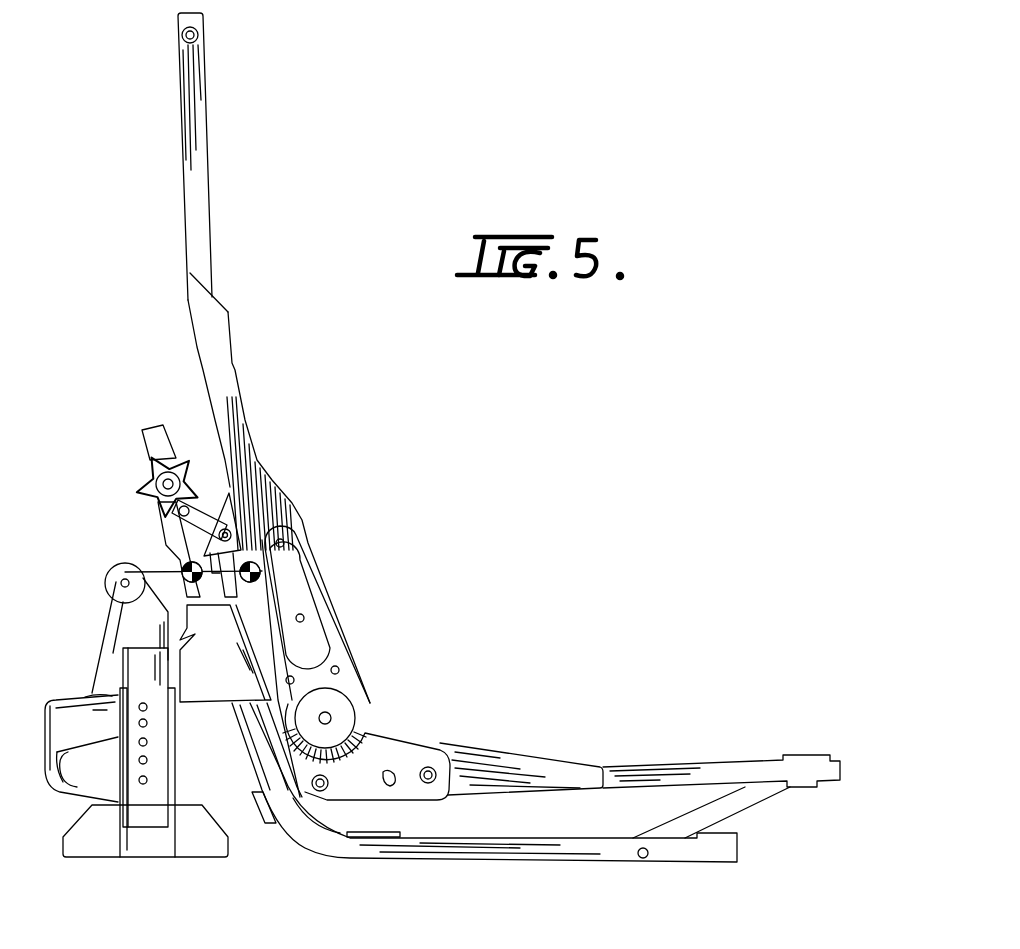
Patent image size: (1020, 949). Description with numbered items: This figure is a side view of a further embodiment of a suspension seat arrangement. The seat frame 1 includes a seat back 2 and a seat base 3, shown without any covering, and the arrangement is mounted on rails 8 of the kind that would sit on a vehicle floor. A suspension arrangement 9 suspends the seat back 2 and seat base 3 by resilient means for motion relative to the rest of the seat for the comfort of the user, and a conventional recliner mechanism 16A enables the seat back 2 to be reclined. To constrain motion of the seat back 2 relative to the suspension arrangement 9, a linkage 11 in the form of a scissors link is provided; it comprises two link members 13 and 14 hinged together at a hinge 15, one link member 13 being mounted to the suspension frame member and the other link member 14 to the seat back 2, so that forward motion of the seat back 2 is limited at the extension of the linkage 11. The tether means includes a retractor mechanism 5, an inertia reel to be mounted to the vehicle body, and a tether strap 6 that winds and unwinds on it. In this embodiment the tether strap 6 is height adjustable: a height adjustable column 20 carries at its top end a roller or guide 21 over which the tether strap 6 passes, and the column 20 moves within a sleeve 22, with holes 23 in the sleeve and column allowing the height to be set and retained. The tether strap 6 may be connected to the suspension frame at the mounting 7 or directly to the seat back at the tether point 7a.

The seat frame 1 is at (247, 350).
The seat back 2 is at (195, 172).
The seat base 3 is at (658, 768).
The retractor mechanism 5 is at (58, 782).
The tether strap 6 is at (100, 635).
The mounting 7 is at (178, 556).
The tether point 7a is at (262, 571).
The rails 8 is at (510, 850).
The suspension arrangement 9 is at (151, 425).
The linkage 11 is at (218, 488).
The link member 13 is at (160, 480).
The link member 14 is at (230, 513).
The hinge 15 is at (240, 531).
The recliner mechanism 16A is at (340, 716).
The height adjustable column 20 is at (145, 667).
The roller or guide 21 is at (118, 572).
The sleeve 22 is at (175, 731).
The holes 23 is at (150, 742).